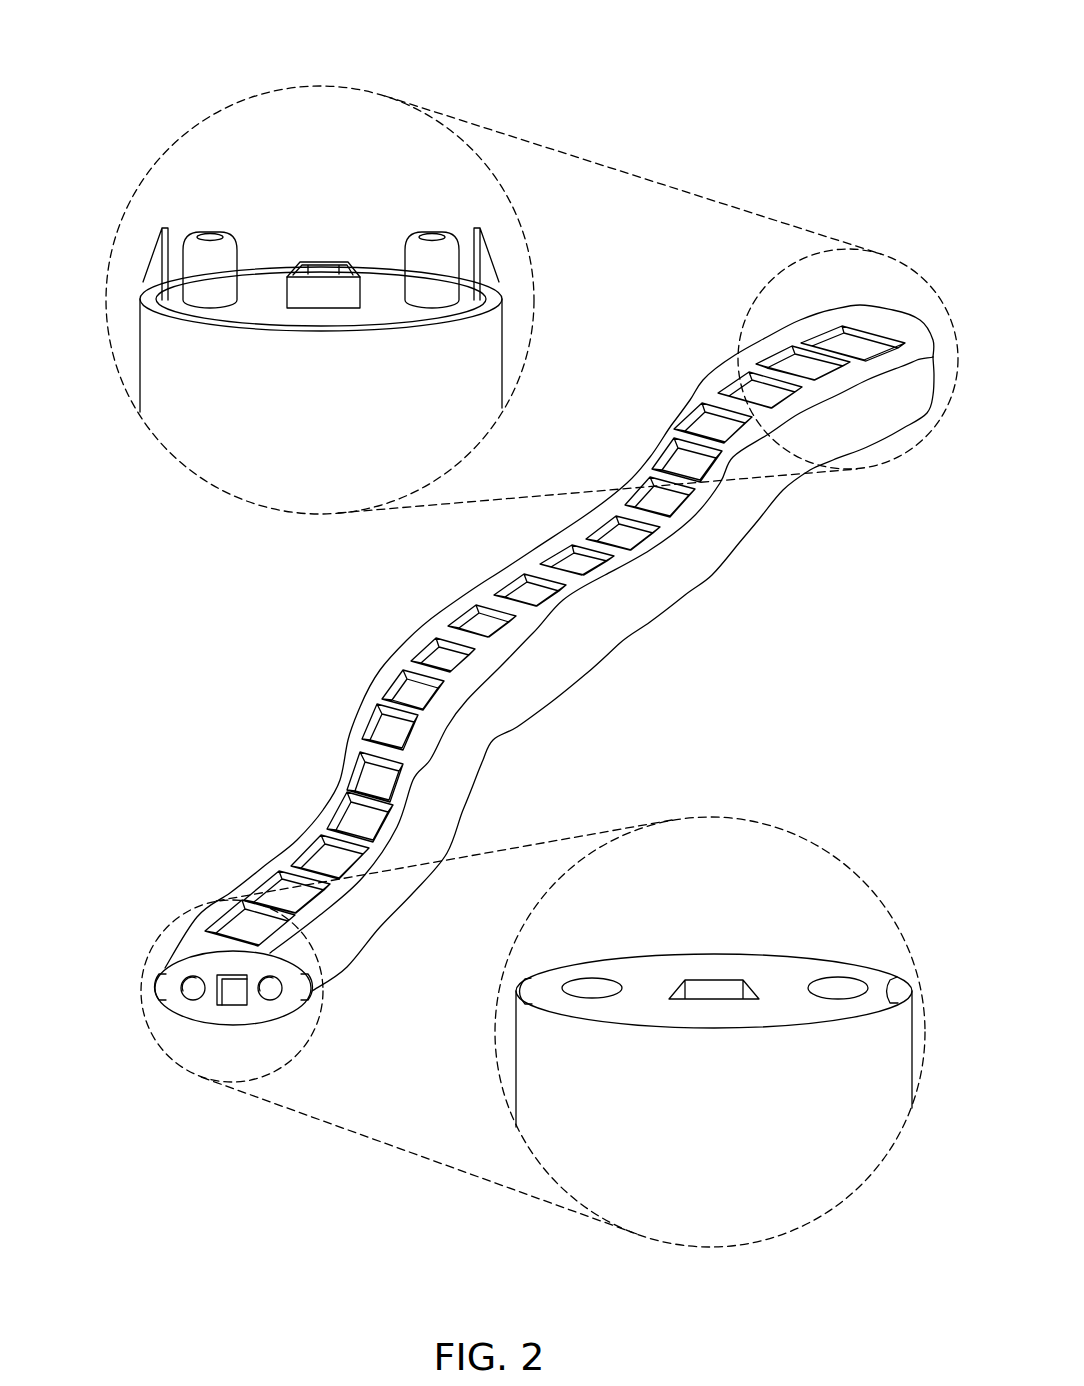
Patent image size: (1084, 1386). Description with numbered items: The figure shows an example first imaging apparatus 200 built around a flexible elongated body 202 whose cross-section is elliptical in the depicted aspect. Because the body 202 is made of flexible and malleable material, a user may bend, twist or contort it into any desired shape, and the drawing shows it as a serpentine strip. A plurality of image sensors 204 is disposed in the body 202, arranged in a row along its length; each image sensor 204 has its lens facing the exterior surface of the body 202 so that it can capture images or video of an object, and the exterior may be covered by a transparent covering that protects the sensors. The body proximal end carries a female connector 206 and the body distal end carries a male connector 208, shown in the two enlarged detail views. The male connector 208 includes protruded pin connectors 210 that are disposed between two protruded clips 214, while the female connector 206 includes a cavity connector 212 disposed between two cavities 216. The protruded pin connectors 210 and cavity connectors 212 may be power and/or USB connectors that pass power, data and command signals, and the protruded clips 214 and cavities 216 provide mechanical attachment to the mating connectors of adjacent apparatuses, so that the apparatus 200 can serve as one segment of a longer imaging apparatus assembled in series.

The first imaging apparatus 200 is at (172, 55).
The flexible elongated body 202 is at (313, 830).
The image sensors 204 is at (443, 657).
The female connector 206 is at (723, 916).
The male connector 208 is at (323, 190).
The protruded pin connectors 210 is at (210, 234).
The cavity connectors 212 is at (834, 987).
The protruded clips 214 is at (146, 264).
The cavities 216 is at (525, 984).